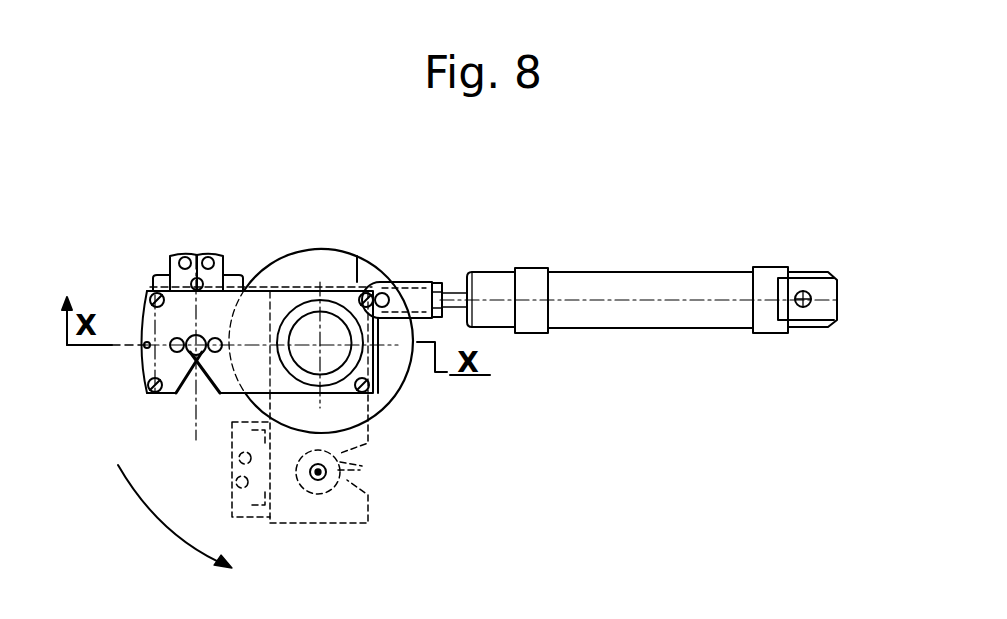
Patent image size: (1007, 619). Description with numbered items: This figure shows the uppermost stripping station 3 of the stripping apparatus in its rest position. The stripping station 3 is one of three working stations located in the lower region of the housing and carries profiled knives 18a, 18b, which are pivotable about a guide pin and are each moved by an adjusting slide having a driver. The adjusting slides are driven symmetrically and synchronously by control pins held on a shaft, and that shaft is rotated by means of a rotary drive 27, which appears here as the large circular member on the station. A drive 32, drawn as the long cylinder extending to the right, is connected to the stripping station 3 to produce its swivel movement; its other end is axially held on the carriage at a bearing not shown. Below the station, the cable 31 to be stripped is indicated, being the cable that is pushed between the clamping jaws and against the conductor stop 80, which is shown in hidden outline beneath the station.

The stripping station 3 is at (228, 382).
The profiled knife 18a is at (218, 268).
The profiled knife 18b is at (172, 258).
The rotary drive 27 is at (333, 265).
The cable 31 is at (326, 472).
The drive 32 is at (587, 322).
The conductor stop 80 is at (301, 486).